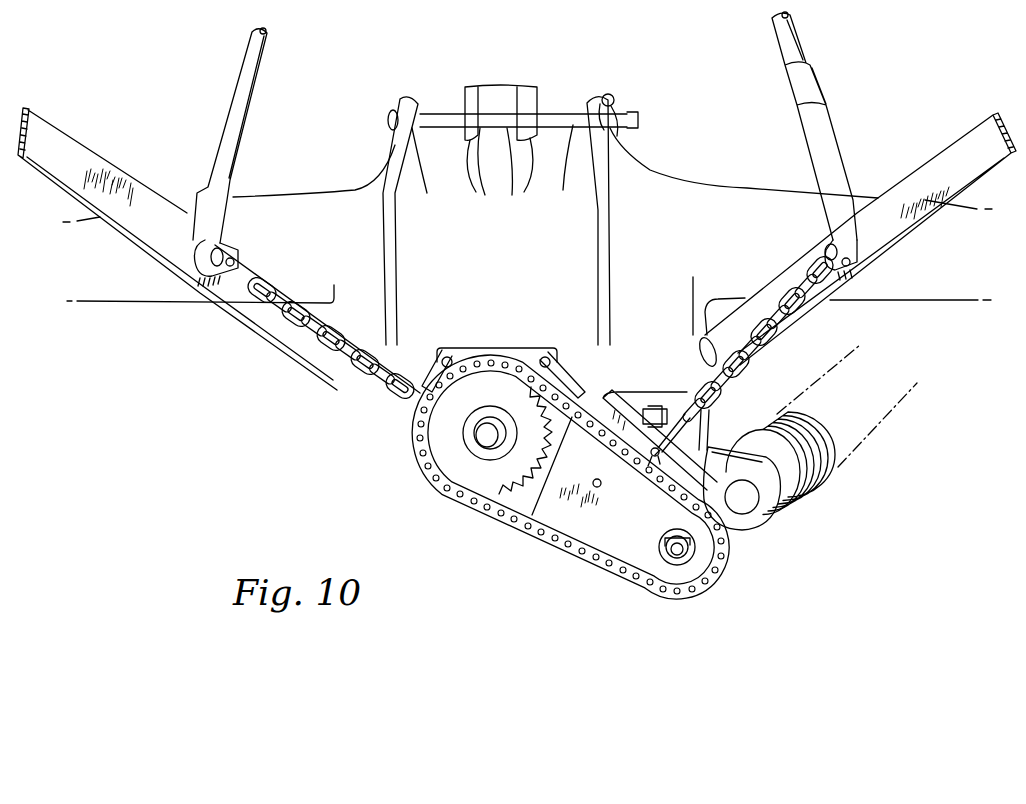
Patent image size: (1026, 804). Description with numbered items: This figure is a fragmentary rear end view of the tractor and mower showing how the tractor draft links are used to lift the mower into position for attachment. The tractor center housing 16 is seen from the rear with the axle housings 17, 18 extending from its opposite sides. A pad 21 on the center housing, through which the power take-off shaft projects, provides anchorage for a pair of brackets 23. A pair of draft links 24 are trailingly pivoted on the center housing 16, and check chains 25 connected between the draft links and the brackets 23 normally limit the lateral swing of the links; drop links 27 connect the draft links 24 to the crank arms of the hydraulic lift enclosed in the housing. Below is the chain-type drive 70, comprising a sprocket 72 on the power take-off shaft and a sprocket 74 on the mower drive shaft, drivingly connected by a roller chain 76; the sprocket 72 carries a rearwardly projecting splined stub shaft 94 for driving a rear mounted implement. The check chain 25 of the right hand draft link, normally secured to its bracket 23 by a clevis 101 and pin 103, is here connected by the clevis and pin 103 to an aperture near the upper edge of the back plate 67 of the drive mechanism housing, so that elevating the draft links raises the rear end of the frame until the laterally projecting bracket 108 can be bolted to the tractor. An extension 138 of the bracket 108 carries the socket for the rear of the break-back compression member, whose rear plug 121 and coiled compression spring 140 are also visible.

The center housing 16 is at (441, 135).
The axle housing 17 is at (119, 296).
The axle housing 18 is at (950, 295).
The pad 21 is at (516, 352).
The brackets 23 is at (432, 362).
The draft links 24 is at (97, 164).
The check chains 25 is at (336, 373).
The drop links 27 is at (255, 80).
The back plate 67 is at (566, 530).
The chain-type drive 70 is at (500, 535).
The sprocket 72 is at (468, 478).
The sprocket 74 is at (672, 575).
The roller chain 76 is at (597, 568).
The stub shaft 94 is at (475, 447).
The clevis 101 is at (654, 440).
The pin 103 is at (660, 458).
The bracket 108 is at (705, 430).
The rear plug 121 is at (790, 490).
The extension 138 is at (752, 520).
The coiled compression spring 140 is at (832, 460).